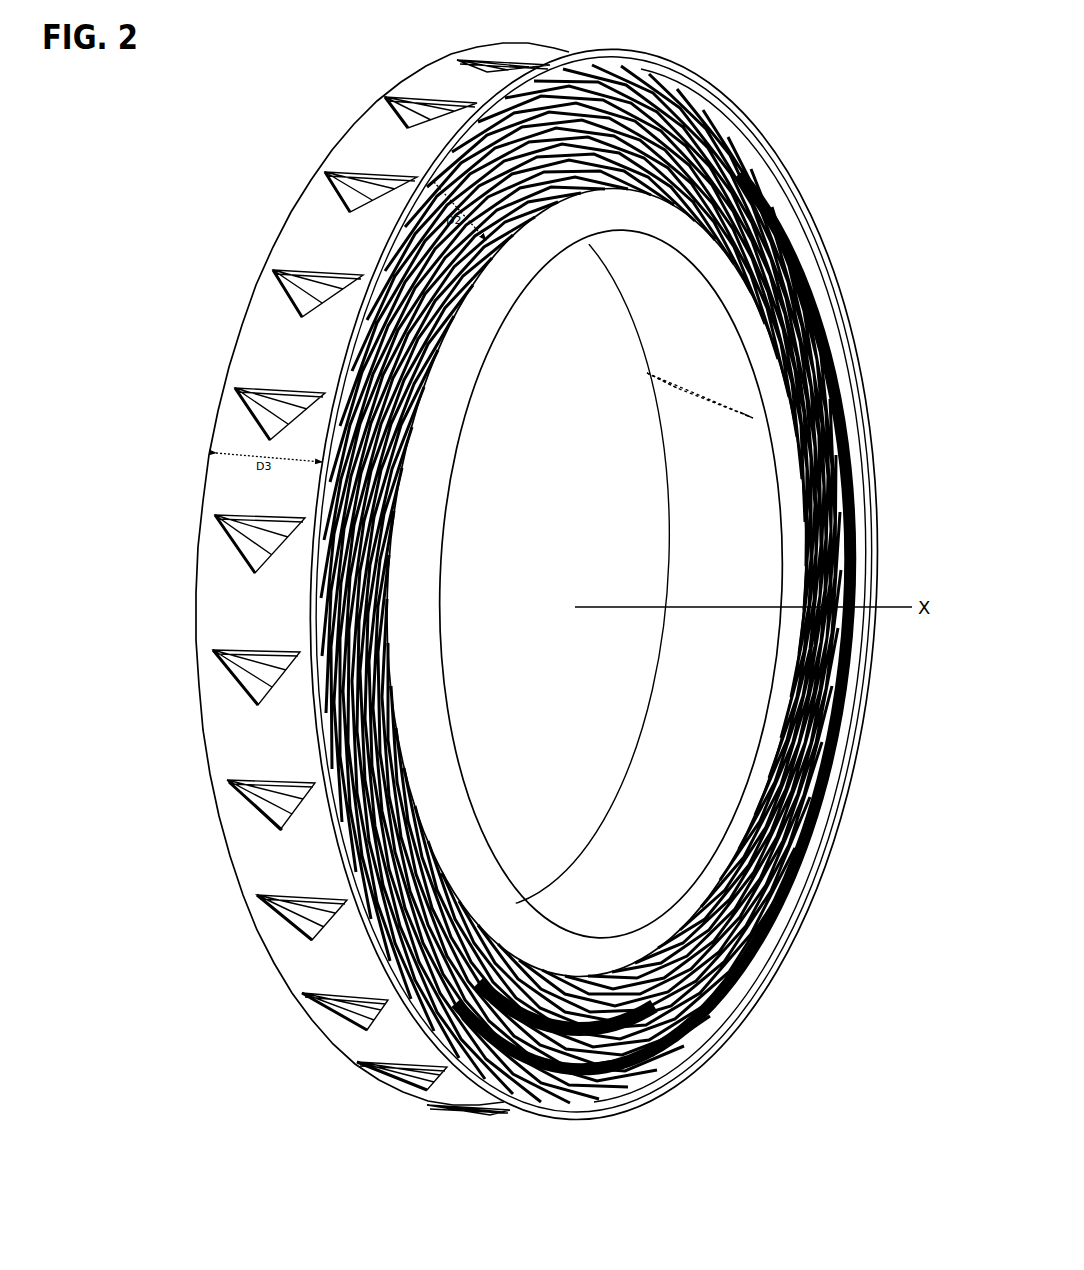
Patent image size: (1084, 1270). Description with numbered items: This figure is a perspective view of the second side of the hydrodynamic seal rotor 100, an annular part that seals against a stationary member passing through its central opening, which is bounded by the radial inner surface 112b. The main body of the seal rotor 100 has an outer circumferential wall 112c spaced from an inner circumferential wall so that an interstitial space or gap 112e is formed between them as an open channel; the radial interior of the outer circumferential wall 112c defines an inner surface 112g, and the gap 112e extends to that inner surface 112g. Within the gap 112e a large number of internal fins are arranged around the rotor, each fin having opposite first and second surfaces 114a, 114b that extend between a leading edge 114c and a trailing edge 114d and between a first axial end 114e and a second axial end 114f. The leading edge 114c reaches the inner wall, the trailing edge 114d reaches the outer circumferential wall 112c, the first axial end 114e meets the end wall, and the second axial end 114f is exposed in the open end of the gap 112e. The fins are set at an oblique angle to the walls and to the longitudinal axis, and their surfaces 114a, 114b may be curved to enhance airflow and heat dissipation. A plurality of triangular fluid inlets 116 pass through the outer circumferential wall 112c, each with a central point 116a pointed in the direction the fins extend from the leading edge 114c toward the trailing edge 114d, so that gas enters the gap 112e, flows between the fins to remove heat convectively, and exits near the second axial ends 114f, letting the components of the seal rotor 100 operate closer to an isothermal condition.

The seal rotor 100 is at (152, 258).
The radial inner surface 112b is at (730, 693).
The outer circumferential wall 112c is at (218, 489).
The interstitial space or gap 112e is at (807, 707).
The inner surface 112g is at (710, 263).
The first surface 114a is at (430, 263).
The second surface 114b is at (673, 958).
The leading edge 114c is at (665, 397).
The trailing edge 114d is at (838, 358).
The first axial end 114e is at (650, 374).
The second axial end 114f is at (752, 421).
The fluid inlets 116 is at (228, 785).
The central point 116a is at (260, 811).